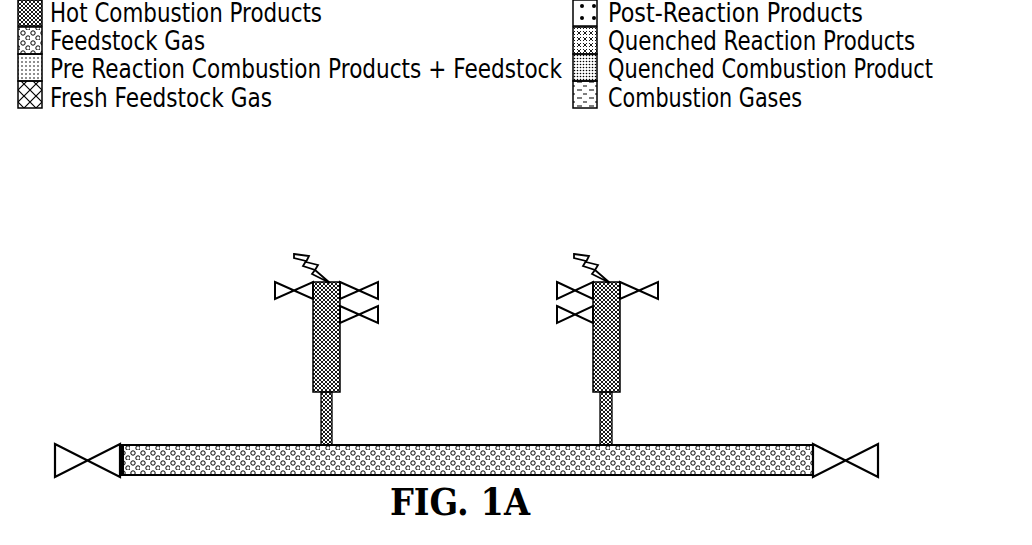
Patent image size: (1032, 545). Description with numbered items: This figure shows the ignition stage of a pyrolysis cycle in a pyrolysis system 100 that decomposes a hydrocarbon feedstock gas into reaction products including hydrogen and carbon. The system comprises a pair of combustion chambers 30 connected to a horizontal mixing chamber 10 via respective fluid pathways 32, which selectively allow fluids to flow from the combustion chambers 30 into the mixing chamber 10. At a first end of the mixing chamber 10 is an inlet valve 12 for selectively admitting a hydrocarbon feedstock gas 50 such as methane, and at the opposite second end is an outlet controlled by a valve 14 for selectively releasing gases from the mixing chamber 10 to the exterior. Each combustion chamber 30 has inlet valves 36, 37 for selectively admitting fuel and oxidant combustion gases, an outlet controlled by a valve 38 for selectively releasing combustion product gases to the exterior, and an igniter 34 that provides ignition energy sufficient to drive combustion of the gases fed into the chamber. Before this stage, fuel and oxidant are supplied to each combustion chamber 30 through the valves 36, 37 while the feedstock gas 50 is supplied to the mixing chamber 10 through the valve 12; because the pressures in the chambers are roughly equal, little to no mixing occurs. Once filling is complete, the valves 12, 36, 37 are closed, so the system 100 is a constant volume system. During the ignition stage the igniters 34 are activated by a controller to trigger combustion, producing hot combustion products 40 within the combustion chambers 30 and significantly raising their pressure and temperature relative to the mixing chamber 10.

The pyrolysis system 100 is at (128, 298).
The mixing chamber 10 is at (718, 477).
The inlet valve 12 is at (75, 447).
The valve 14 is at (830, 447).
The combustion chamber 30 is at (313, 355).
The fluid pathway 32 is at (321, 420).
The igniter 34 is at (298, 257).
The inlet valve 36 is at (378, 291).
The inlet valve 37 is at (378, 315).
The valve 38 is at (275, 291).
The combustion products 40 is at (313, 312).
The hydrocarbon feedstock gas 50 is at (462, 462).